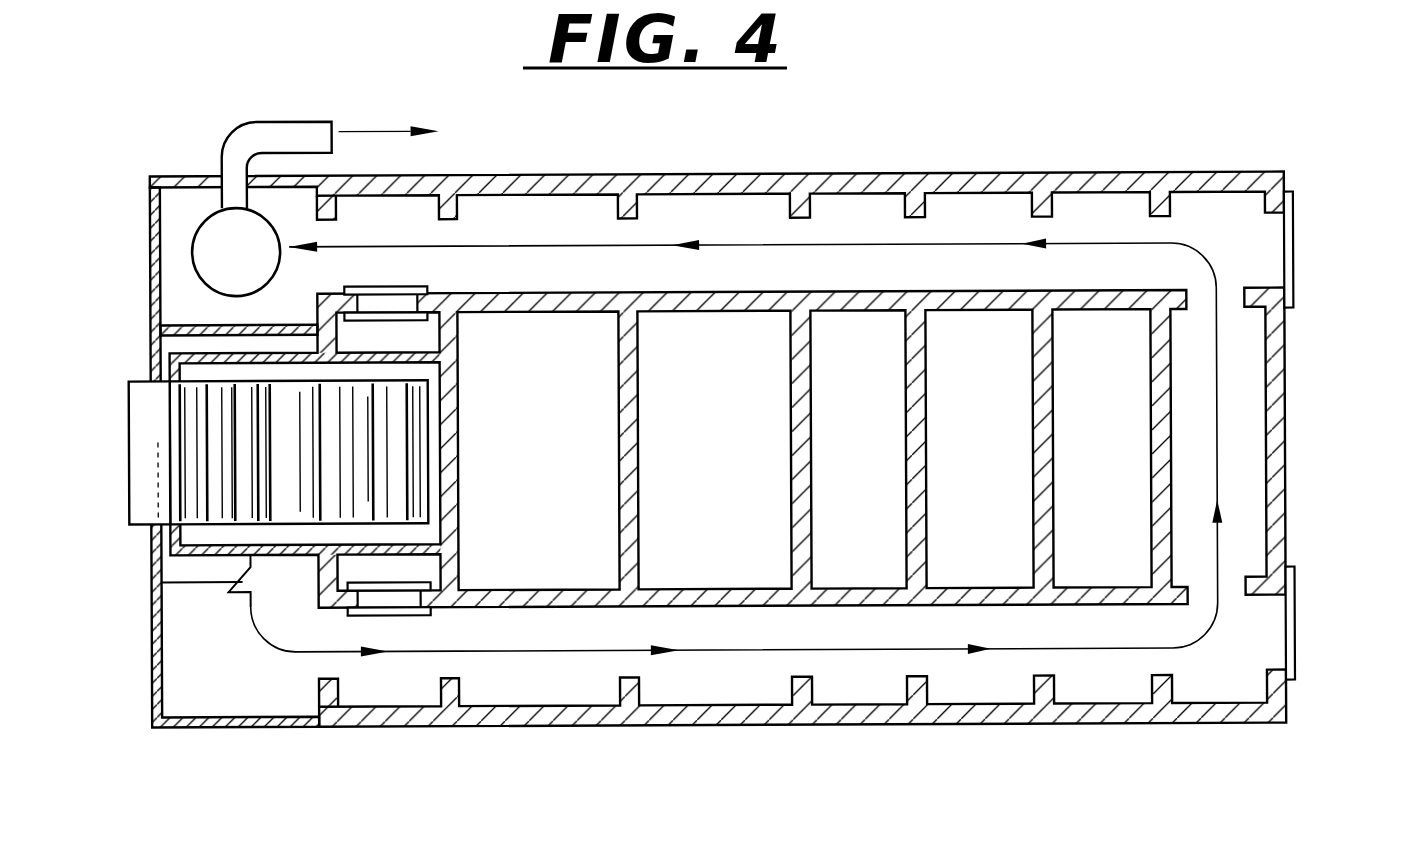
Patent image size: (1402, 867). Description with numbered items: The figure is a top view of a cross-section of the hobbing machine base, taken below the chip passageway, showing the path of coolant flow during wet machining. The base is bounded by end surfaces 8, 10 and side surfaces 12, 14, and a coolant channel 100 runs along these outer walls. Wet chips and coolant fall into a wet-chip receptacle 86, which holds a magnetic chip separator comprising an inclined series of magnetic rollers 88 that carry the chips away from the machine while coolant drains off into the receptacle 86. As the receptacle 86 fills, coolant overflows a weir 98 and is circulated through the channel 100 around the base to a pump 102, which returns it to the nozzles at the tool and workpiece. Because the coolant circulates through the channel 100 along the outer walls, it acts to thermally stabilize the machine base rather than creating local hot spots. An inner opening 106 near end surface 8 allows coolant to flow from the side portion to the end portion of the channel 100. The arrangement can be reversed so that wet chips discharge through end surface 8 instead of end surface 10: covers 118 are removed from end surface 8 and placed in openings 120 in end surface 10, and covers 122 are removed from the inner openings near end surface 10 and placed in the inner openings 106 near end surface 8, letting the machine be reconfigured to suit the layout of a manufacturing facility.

The end surface 8 is at (1284, 343).
The end surface 10 is at (297, 729).
The side surface 12 is at (707, 725).
The side surface 14 is at (685, 173).
The wet-chip receptacle 86 is at (183, 661).
The magnetic rollers 88 is at (149, 397).
The weir 98 is at (189, 579).
The coolant channel 100 is at (513, 688).
The pump 102 is at (191, 240).
The inner opening 106 is at (1233, 290).
The covers 118 is at (1293, 248).
The openings 120 is at (330, 232).
The covers 122 is at (407, 322).